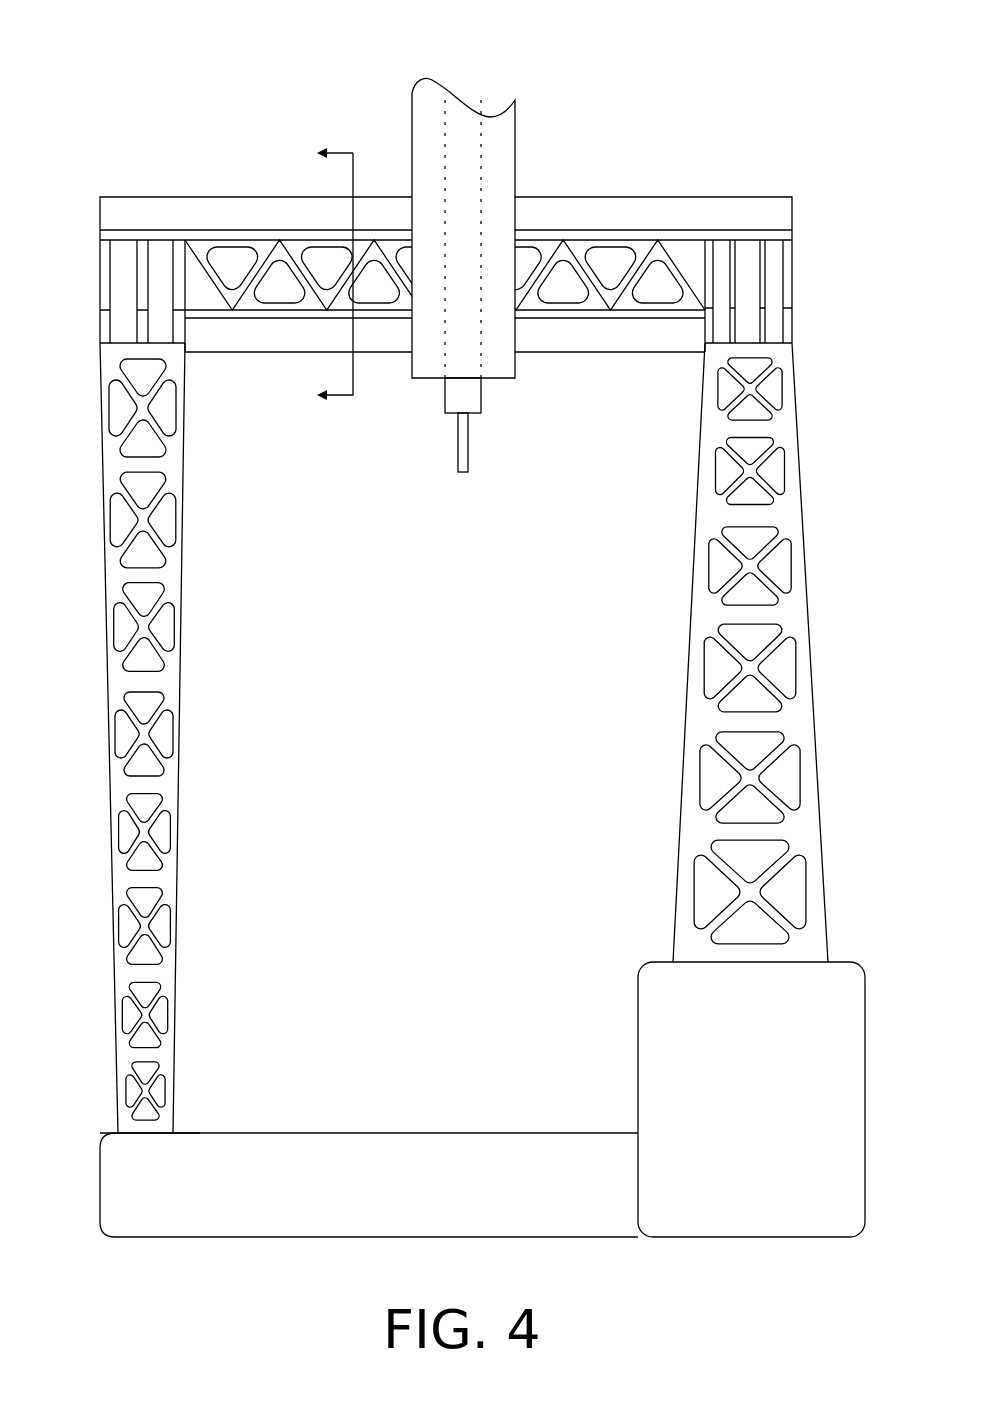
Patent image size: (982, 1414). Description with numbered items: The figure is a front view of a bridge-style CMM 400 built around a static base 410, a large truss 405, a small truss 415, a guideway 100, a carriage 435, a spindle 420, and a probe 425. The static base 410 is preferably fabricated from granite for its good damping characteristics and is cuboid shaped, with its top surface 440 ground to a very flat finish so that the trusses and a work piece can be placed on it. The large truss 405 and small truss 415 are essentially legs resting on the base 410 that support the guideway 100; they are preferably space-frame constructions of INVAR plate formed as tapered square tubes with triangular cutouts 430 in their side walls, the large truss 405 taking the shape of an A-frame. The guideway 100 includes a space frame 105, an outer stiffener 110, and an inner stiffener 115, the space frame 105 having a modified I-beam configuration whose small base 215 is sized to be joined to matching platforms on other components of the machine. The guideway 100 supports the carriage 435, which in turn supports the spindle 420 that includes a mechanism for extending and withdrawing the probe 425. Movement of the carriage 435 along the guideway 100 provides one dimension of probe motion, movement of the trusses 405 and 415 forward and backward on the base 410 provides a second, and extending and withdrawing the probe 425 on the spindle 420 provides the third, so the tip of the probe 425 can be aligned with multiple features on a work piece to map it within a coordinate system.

The bridge-style CMM 400 is at (146, 49).
The guideway 100 is at (808, 197).
The outer stiffener 110 is at (127, 213).
The space frame 105 is at (93, 292).
The small base 215 is at (185, 178).
The inner stiffener 115 is at (213, 326).
The carriage 435 is at (420, 117).
The spindle 420 is at (443, 393).
The probe 425 is at (465, 446).
The small truss 415 is at (102, 510).
The large truss 405 is at (802, 492).
The triangular cutouts 430 is at (125, 828).
The top surface 440 is at (197, 1133).
The static base 410 is at (160, 1200).